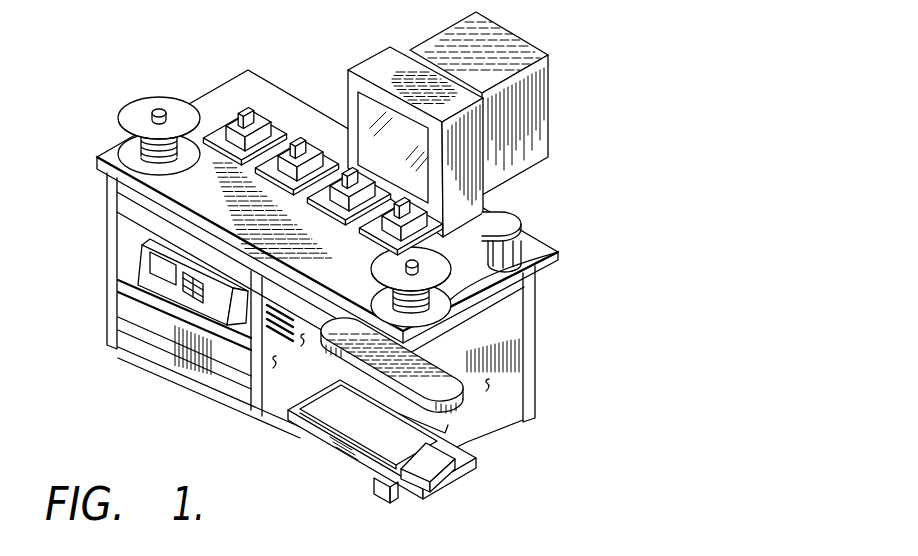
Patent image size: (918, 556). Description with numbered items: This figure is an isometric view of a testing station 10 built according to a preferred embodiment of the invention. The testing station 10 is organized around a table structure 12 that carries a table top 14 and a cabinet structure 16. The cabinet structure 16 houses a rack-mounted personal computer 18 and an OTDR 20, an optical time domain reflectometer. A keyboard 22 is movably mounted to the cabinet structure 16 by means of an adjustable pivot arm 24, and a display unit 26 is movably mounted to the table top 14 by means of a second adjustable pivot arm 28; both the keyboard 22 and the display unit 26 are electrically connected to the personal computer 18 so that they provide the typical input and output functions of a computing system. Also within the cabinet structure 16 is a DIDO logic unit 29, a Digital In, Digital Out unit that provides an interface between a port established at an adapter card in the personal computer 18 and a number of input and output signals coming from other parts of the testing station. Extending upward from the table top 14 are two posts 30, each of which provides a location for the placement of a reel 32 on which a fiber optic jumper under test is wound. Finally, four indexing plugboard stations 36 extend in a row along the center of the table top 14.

The testing station 10 is at (540, 349).
The table structure 12 is at (535, 400).
The table top 14 is at (503, 299).
The cabinet structure 16 is at (490, 392).
The rack-mounted personal computer 18 is at (302, 345).
The OTDR 20 is at (160, 288).
The keyboard 22 is at (449, 485).
The adjustable pivot arm 24 is at (423, 364).
The display unit 26 is at (548, 115).
The adjustable pivot arm 28 is at (500, 212).
The DIDO logic unit 29 is at (275, 366).
The post 30 is at (157, 109).
The reel 32 is at (123, 107).
The indexing plugboard stations 36 is at (245, 112).